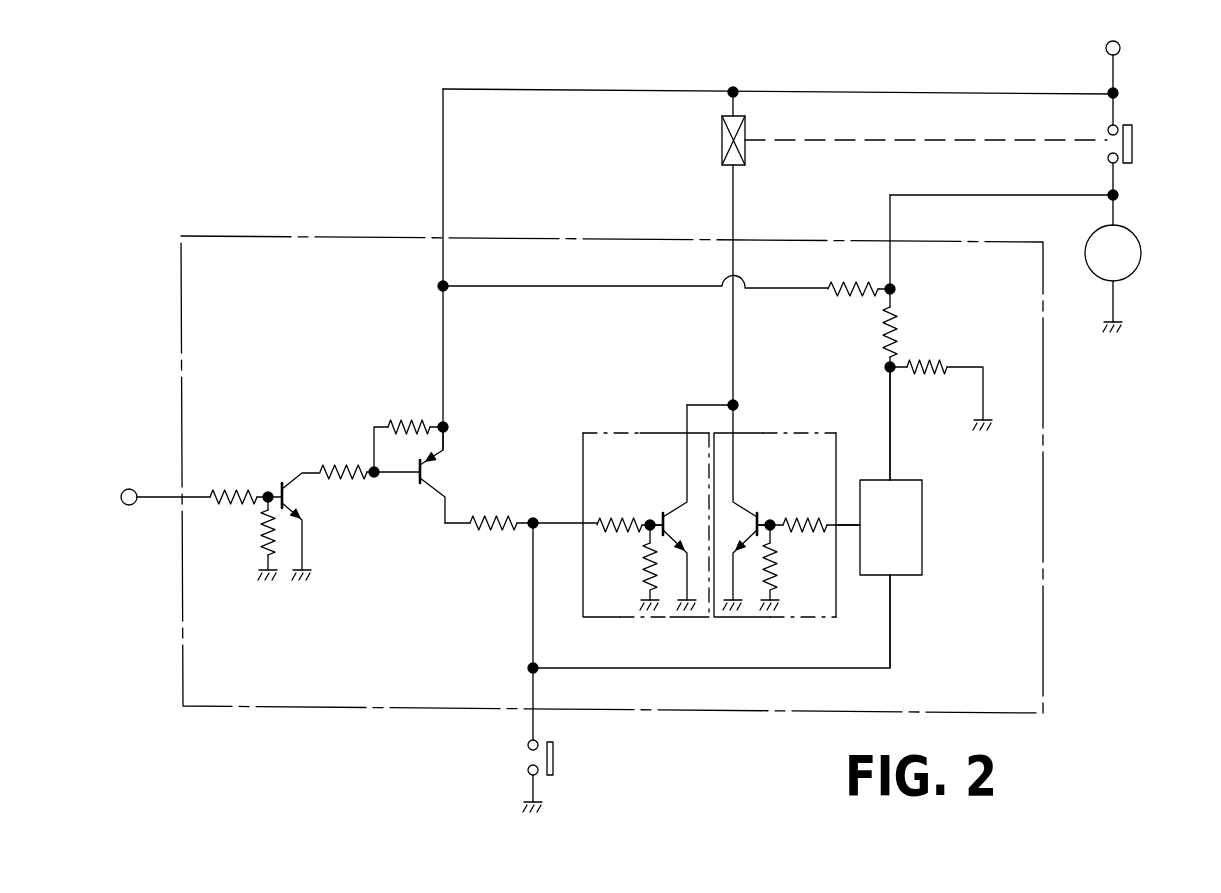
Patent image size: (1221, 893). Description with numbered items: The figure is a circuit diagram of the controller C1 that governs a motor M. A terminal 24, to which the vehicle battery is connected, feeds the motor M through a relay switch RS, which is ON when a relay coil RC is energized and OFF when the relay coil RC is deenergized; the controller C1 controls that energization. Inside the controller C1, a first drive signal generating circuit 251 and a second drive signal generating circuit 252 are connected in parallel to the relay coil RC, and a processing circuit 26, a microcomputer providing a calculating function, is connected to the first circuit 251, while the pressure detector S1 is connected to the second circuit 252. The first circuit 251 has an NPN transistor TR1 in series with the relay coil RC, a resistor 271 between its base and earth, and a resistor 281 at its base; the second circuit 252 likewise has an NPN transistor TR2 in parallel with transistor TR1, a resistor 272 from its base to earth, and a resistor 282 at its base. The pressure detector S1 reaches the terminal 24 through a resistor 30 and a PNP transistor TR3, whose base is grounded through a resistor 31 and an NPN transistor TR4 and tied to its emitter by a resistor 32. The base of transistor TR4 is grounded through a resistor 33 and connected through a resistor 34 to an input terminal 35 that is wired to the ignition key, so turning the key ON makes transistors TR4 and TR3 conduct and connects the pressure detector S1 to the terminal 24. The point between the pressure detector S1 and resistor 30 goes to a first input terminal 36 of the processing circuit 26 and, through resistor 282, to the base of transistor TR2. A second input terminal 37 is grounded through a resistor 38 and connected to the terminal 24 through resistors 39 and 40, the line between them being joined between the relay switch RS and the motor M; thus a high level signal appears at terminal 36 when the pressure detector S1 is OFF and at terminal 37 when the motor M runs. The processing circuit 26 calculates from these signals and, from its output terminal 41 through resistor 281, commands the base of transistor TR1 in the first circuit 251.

The terminal 24 is at (1121, 47).
The relay coil RC is at (722, 140).
The relay switch RS is at (1132, 143).
The motor M is at (1125, 256).
The controller C1 is at (1045, 492).
The input terminal 35 is at (126, 505).
The resistor 34 is at (216, 490).
The resistor 33 is at (263, 525).
The NPN transistor TR4 is at (280, 490).
The resistor 31 is at (338, 480).
The resistor 32 is at (415, 422).
The PNP transistor TR3 is at (416, 485).
The resistor 30 is at (487, 527).
The second drive signal generating circuit 252 is at (598, 432).
The first drive signal generating circuit 251 is at (826, 432).
The resistor 282 is at (605, 520).
The resistor 281 is at (798, 520).
The NPN transistor TR2 is at (652, 515).
The NPN transistor TR1 is at (762, 515).
The resistor 272 is at (646, 575).
The resistor 271 is at (777, 575).
The processing circuit 26 is at (898, 547).
The output terminal 41 is at (848, 524).
The second input terminal 37 is at (892, 478).
The first input terminal 36 is at (893, 580).
The resistor 39 is at (893, 320).
The resistor 38 is at (930, 360).
The resistor 40 is at (845, 298).
The pressure detector S1 is at (553, 757).